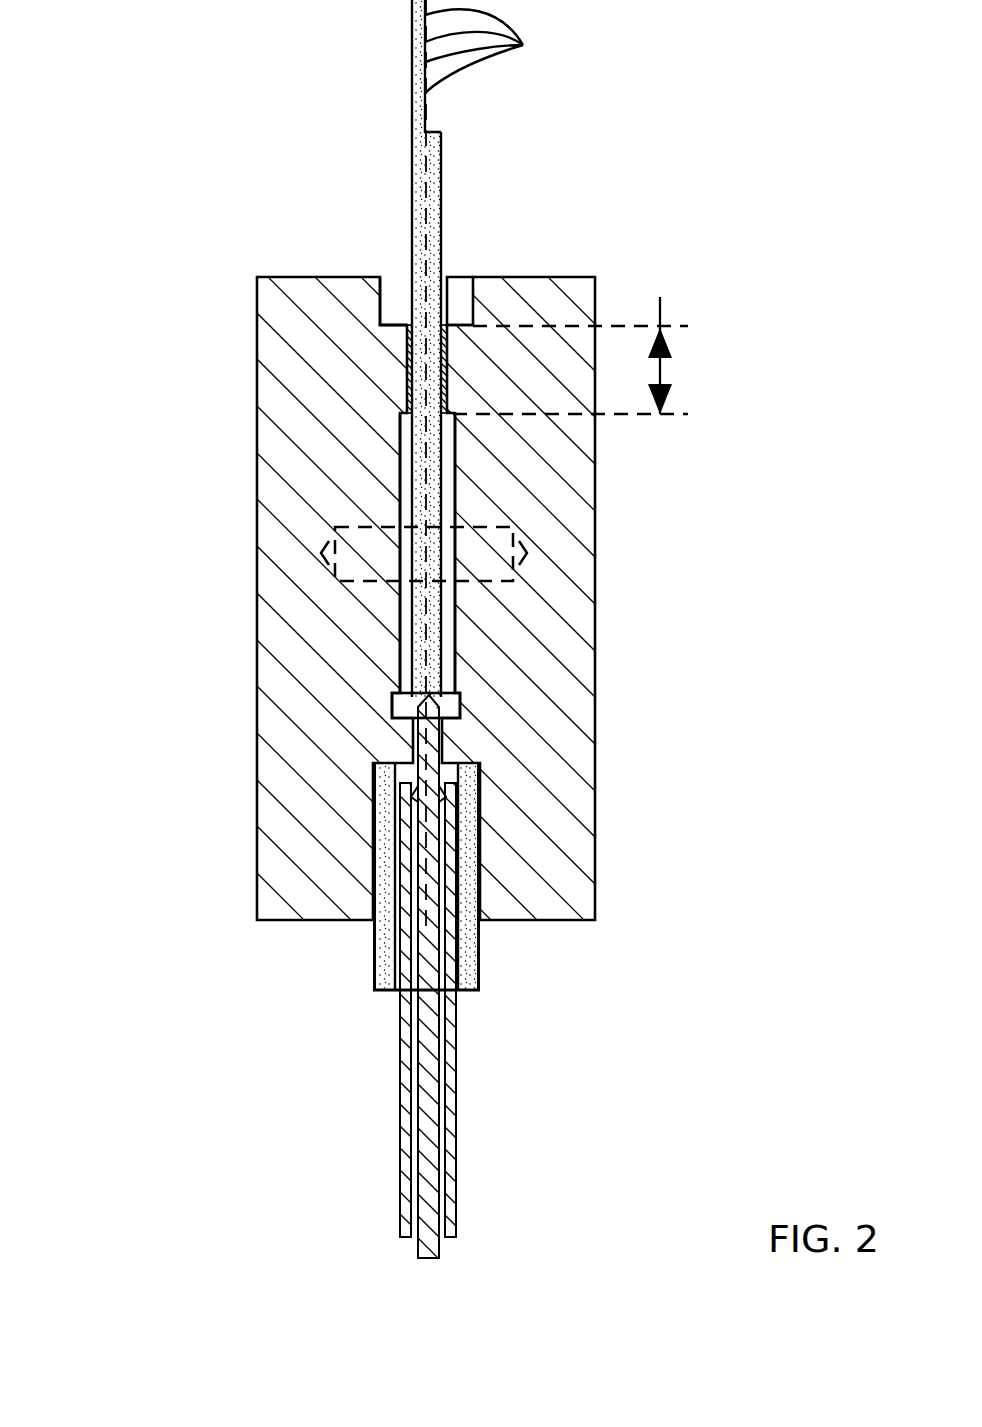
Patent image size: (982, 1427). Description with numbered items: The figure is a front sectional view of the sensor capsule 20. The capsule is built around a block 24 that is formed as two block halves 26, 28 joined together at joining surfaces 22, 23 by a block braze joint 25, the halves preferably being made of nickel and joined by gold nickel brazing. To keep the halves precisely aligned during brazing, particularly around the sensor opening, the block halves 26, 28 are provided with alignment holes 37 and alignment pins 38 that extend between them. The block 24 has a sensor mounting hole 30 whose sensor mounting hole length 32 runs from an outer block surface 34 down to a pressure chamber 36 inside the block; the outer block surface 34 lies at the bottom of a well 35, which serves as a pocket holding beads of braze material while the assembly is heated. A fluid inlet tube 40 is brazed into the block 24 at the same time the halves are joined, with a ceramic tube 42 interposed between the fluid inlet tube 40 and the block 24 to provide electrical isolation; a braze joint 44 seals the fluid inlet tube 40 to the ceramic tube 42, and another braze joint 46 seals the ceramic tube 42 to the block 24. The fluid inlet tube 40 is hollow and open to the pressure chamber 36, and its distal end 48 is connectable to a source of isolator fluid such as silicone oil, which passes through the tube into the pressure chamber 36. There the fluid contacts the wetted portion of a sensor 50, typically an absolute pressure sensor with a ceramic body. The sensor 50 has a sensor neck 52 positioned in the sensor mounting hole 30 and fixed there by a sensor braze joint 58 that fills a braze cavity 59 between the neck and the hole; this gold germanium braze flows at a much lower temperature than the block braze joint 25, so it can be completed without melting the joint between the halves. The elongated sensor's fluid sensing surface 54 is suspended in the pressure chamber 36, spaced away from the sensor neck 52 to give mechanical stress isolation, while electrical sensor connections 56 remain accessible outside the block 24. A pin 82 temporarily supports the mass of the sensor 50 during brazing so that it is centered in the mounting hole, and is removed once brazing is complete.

The sensor capsule 20 is at (150, 76).
The joining surface 22 is at (427, 625).
The joining surface 23 is at (422, 465).
The block 24 is at (158, 432).
The block braze joint 25 is at (422, 465).
The block half 26 is at (330, 498).
The block half 28 is at (485, 465).
The sensor mounting hole 30 is at (350, 327).
The sensor mounting hole length 32 is at (660, 297).
The outer block surface 34 is at (397, 318).
The well 35 is at (488, 258).
The pressure chamber 36 is at (407, 423).
The alignment holes 37 is at (322, 548).
The alignment pins 38 is at (525, 568).
The fluid inlet tube 40 is at (403, 1117).
The ceramic tube 42 is at (378, 972).
The braze joint 44 is at (460, 972).
The braze joint 46 is at (480, 830).
The distal end 48 is at (400, 1235).
The sensor 50 is at (430, 158).
The sensor neck 52 is at (420, 378).
The fluid sensing surface 54 is at (443, 660).
The electrical sensor connections 56 is at (500, 51).
The sensor braze joint 58 is at (445, 370).
The braze cavity 59 is at (425, 368).
The pin 82 is at (430, 1262).